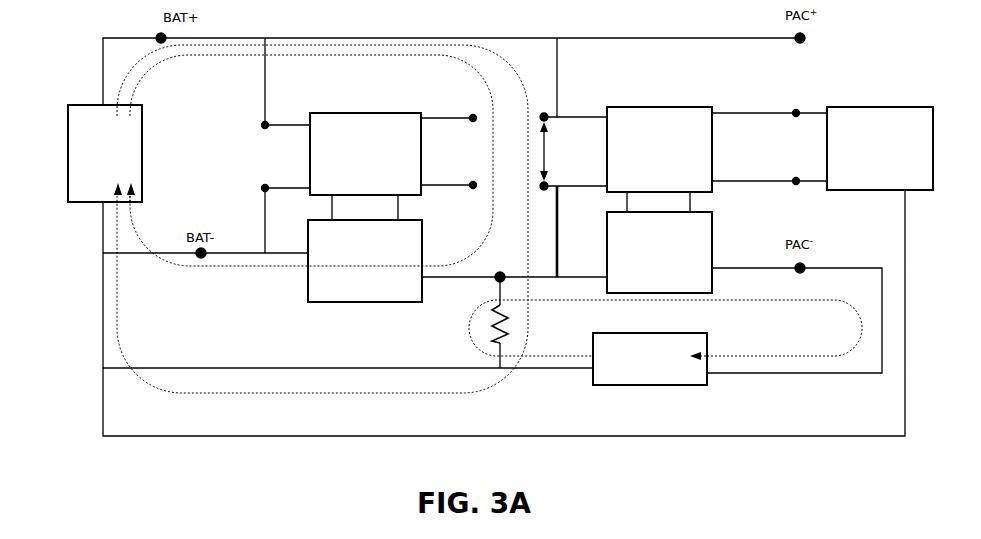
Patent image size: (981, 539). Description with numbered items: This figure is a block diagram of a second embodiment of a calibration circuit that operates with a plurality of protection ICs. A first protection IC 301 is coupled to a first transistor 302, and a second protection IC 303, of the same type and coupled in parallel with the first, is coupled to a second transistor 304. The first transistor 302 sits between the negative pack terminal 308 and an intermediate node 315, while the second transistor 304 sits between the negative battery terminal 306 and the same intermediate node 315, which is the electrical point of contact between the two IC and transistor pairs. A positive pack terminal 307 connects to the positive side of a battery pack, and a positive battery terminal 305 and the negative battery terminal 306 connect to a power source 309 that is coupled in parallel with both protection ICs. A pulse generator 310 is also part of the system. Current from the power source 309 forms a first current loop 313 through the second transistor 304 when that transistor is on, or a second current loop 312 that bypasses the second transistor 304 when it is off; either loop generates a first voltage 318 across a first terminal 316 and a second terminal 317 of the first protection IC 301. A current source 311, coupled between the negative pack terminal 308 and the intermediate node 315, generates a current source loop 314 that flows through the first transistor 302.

The first protection IC 301 is at (662, 106).
The first transistor 302 is at (681, 294).
The second protection IC 303 is at (364, 112).
The second transistor 304 is at (360, 303).
The positive battery terminal 305 is at (157, 35).
The negative battery terminal 306 is at (201, 259).
The positive pack terminal 307 is at (806, 40).
The negative pack terminal 308 is at (799, 274).
The power source 309 is at (67, 168).
The pulse generator 310 is at (877, 106).
The current source 311 is at (707, 383).
The second current loop 312 is at (316, 45).
The first current loop 313 is at (466, 58).
The current source loop 314 is at (828, 358).
The intermediate node 315 is at (501, 271).
The first terminal 316 is at (548, 114).
The second terminal 317 is at (547, 190).
The first voltage 318 is at (548, 158).